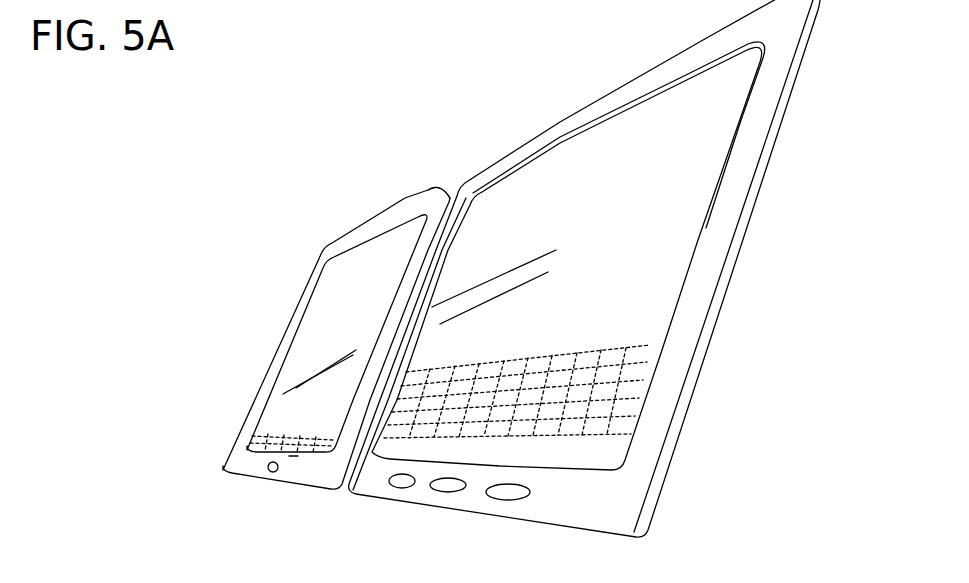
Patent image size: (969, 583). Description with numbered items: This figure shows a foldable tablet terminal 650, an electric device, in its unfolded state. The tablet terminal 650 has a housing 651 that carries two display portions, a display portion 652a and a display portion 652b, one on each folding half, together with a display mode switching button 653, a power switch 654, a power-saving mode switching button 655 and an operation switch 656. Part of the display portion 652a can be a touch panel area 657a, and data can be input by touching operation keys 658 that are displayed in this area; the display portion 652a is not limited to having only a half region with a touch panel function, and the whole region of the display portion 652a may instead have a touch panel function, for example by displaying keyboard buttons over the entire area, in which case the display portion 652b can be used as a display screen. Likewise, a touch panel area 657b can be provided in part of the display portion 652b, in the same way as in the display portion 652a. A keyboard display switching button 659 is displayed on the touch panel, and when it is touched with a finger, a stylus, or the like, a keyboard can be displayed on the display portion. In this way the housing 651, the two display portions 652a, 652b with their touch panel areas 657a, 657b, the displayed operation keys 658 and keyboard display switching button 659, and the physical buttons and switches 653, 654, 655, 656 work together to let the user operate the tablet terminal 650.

The tablet terminal 650 is at (248, 238).
The housing 651 is at (427, 197).
The display portion 652a is at (588, 150).
The display portion 652b is at (355, 265).
The display mode switching button 653 is at (395, 488).
The power switch 654 is at (437, 492).
The power-saving mode switching button 655 is at (492, 499).
The operation switch 656 is at (266, 470).
The touch panel area 657a is at (641, 408).
The touch panel area 657b is at (250, 427).
The operation keys 658 is at (257, 442).
The keyboard display switching button 659 is at (293, 457).